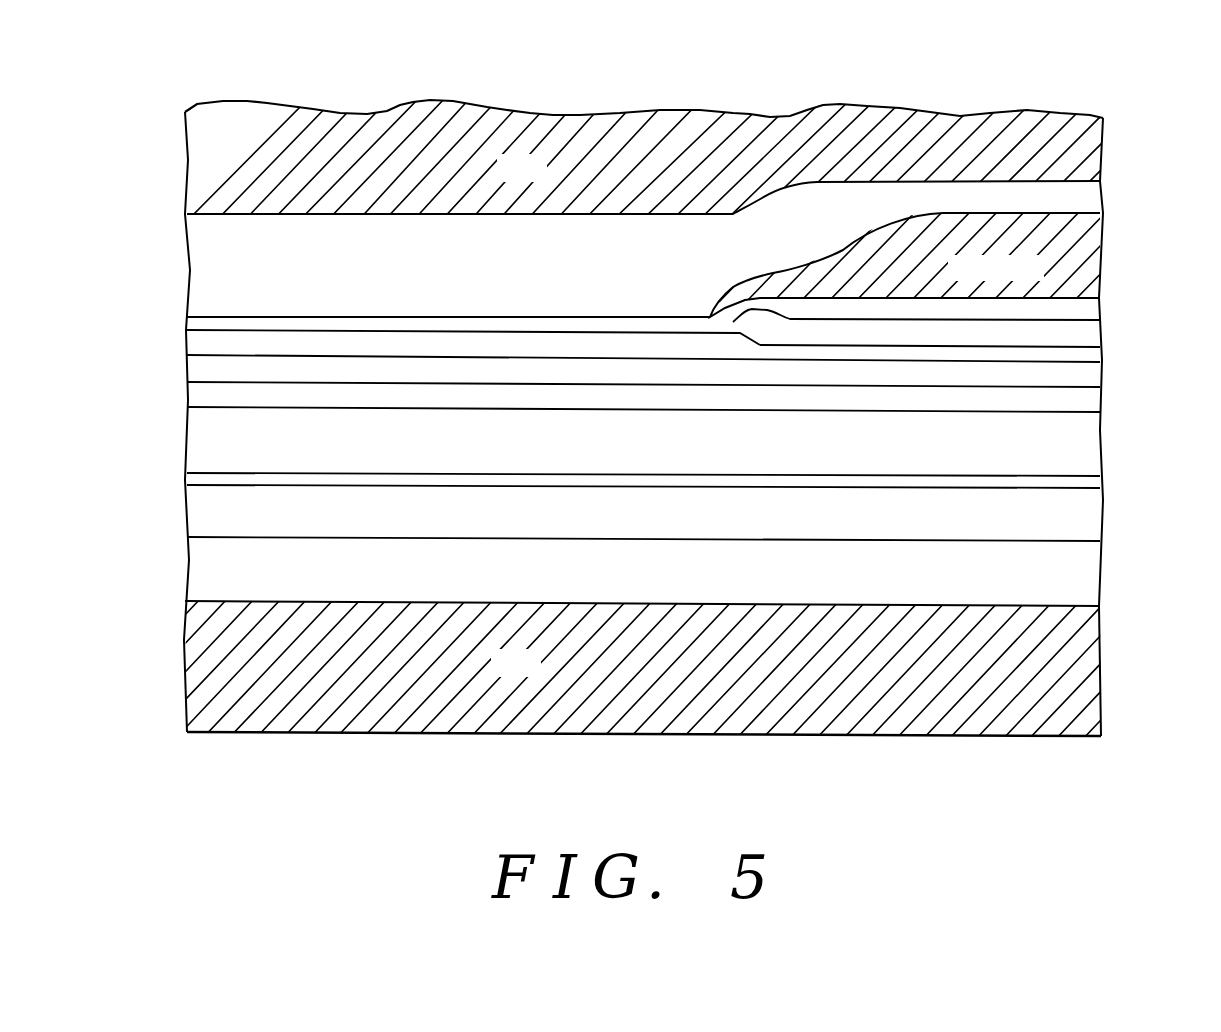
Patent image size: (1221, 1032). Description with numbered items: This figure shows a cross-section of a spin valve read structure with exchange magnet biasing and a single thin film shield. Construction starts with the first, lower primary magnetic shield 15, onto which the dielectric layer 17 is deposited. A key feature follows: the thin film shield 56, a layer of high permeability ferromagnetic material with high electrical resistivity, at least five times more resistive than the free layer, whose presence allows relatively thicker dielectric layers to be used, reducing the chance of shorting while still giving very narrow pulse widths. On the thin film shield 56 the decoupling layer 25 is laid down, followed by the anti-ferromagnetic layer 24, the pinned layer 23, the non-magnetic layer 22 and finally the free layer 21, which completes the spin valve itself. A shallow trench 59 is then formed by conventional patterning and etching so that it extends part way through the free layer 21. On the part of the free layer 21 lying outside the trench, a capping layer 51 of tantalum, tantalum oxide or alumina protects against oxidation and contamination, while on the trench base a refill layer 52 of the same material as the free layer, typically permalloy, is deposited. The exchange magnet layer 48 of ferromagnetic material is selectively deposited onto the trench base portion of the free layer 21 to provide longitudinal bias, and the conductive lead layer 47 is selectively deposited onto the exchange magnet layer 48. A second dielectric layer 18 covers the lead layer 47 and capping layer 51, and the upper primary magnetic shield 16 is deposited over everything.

The first primary magnetic shield 15 is at (1078, 667).
The upper primary magnetic shield 16 is at (1092, 152).
The dielectric layer 17 is at (1082, 570).
The second dielectric layer 18 is at (215, 265).
The free layer 21 is at (207, 345).
The non-magnetic layer 22 is at (1082, 367).
The pinned layer 23 is at (1082, 402).
The anti-ferromagnetic layer 24 is at (1088, 433).
The decoupling layer 25 is at (1088, 483).
The conductive lead layer 47 is at (1092, 260).
The exchange magnet layer 48 is at (1088, 312).
The capping layer 51 is at (213, 326).
The refill layer 52 is at (1088, 337).
The thin film shield 56 is at (1088, 523).
The shallow trench 59 is at (988, 242).